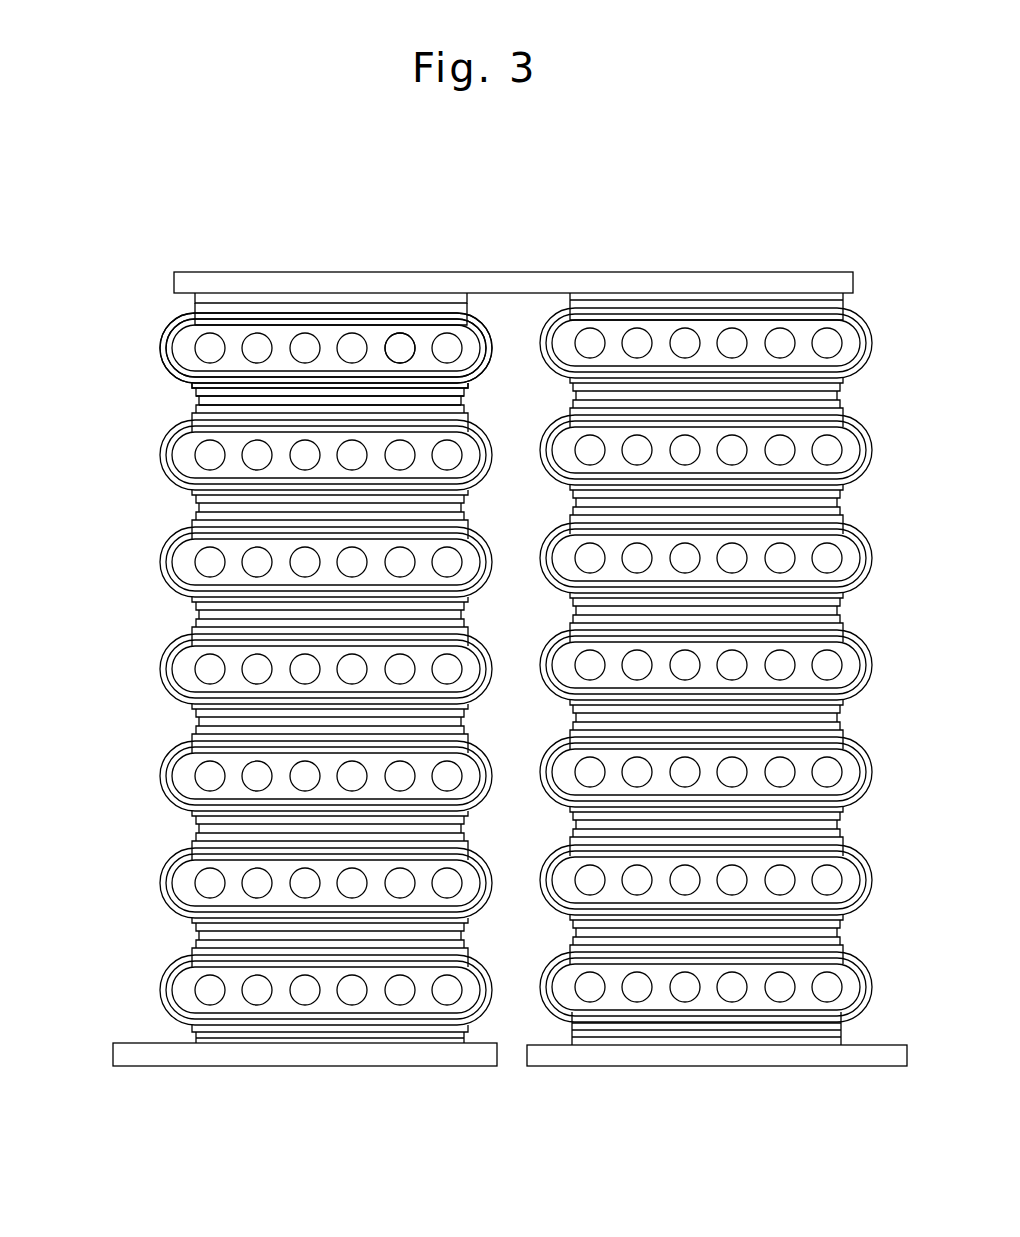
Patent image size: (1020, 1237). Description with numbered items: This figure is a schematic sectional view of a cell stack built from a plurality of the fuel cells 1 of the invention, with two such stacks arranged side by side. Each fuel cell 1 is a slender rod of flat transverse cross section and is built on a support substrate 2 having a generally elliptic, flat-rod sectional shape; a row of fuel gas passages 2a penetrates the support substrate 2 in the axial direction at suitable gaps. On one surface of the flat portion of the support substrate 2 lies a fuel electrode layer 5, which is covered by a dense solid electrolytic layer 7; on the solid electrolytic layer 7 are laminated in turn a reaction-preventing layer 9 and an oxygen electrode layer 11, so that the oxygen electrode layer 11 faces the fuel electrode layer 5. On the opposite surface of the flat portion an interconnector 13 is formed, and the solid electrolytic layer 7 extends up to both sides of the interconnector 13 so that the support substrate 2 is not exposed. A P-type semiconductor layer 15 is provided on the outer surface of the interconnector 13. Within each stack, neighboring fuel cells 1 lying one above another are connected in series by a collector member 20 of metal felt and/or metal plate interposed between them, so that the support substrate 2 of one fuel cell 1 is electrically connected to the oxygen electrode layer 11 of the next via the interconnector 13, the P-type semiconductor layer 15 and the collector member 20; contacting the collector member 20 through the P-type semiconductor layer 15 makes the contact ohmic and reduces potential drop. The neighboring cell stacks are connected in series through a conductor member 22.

The fuel cell 1 is at (158, 930).
The support substrate 2 is at (190, 343).
The fuel gas passages 2a is at (405, 345).
The fuel electrode layer 5 is at (170, 360).
The solid electrolytic layer 7 is at (177, 378).
The reaction-preventing layer 9 is at (180, 395).
The oxygen electrode layer 11 is at (197, 403).
The interconnector 13 is at (228, 322).
The P-type semiconductor layer 15 is at (247, 308).
The collector member 20 is at (300, 287).
The conductor member 22 is at (575, 282).